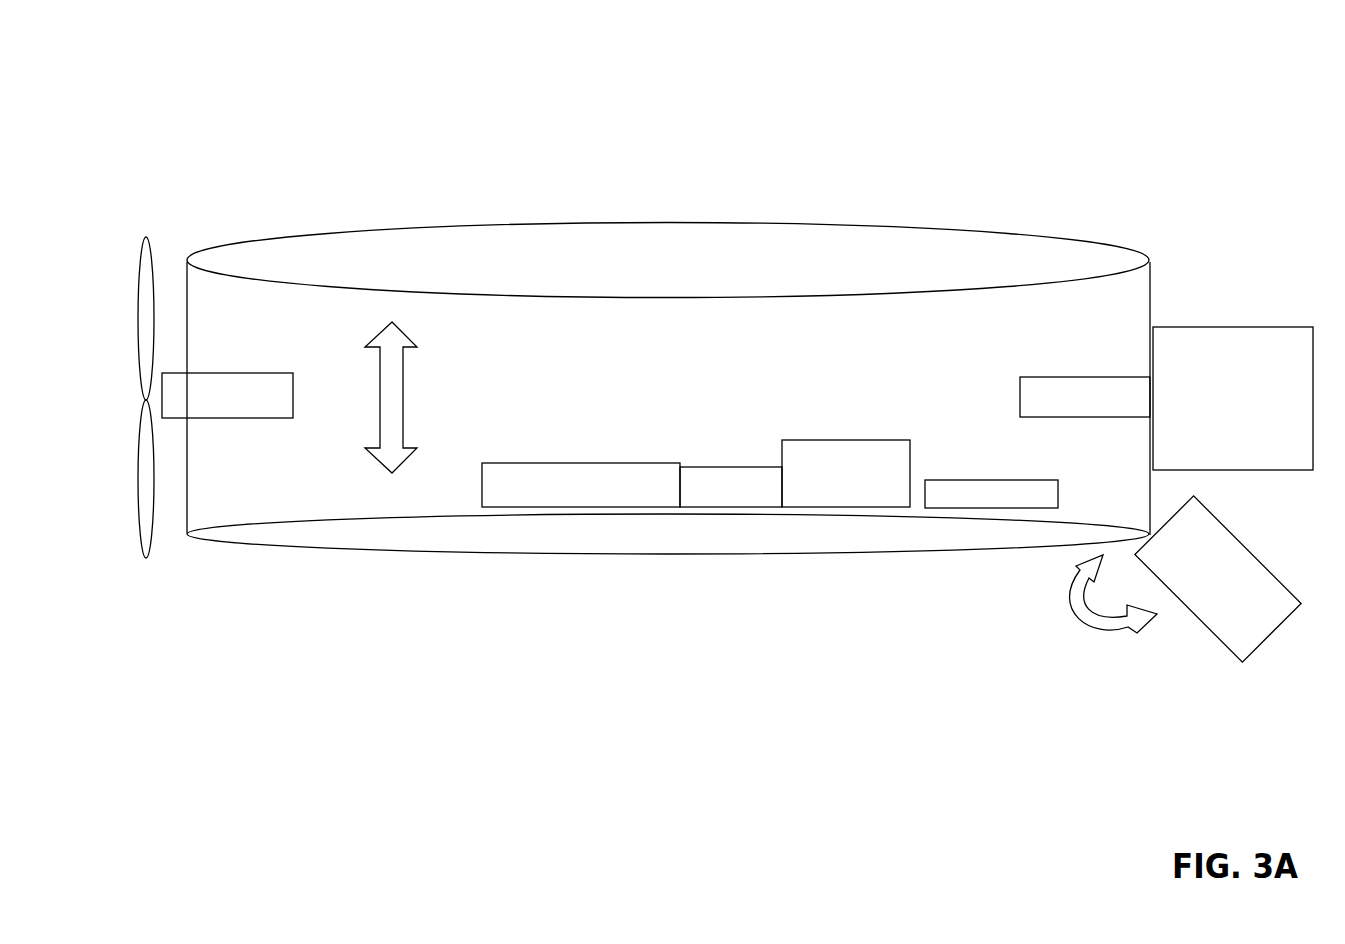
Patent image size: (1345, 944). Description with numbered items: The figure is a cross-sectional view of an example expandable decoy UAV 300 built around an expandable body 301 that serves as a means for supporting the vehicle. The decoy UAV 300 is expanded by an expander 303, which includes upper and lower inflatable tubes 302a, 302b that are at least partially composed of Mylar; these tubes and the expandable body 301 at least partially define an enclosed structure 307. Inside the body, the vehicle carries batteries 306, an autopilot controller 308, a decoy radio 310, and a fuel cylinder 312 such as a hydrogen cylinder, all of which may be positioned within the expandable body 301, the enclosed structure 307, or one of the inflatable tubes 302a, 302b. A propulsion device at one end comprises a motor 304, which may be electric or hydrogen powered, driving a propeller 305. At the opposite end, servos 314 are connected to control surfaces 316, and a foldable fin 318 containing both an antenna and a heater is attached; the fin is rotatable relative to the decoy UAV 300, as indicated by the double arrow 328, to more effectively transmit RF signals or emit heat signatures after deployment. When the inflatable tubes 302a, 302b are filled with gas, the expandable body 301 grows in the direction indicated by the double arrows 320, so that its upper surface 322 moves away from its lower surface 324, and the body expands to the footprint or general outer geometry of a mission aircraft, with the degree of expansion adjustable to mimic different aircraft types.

The decoy UAV 300 is at (362, 70).
The expandable body 301 is at (391, 136).
The expander 303 is at (456, 186).
The inflatable tube 302a is at (877, 227).
The inflatable tube 302b is at (903, 553).
The motor 304 is at (202, 418).
The propeller 305 is at (145, 560).
The batteries 306 is at (512, 463).
The enclosed structure 307 is at (753, 376).
The autopilot controller 308 is at (695, 467).
The decoy radio 310 is at (842, 440).
The fuel cylinder 312 is at (965, 480).
The servos 314 is at (1033, 377).
The control surfaces 316 is at (1200, 327).
The foldable fin 318 is at (1255, 555).
The double arrows 320 is at (403, 363).
The upper surface 322 is at (672, 223).
The lower surface 324 is at (653, 553).
The double arrow 328 is at (1098, 642).